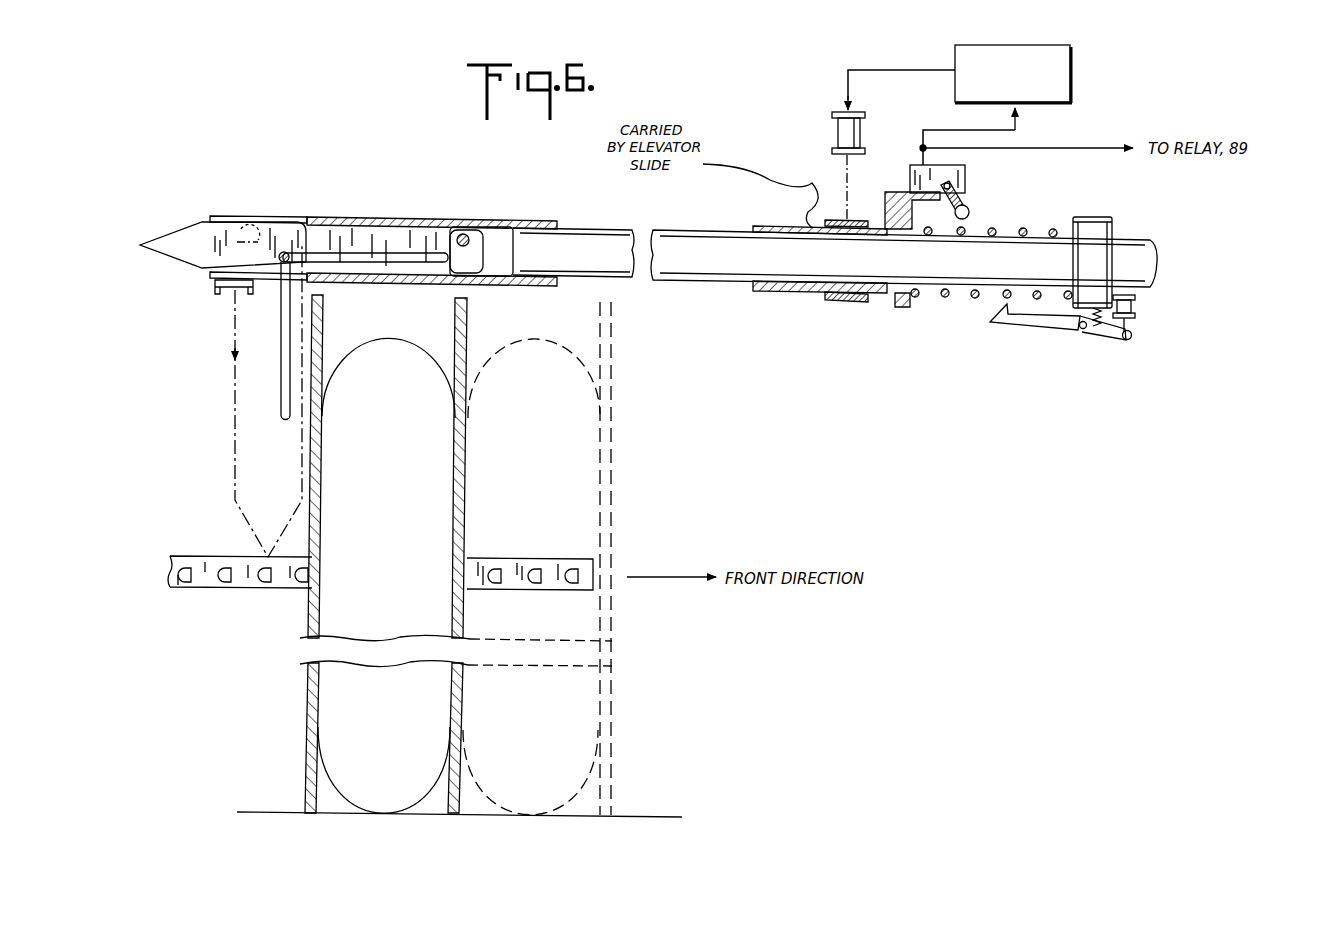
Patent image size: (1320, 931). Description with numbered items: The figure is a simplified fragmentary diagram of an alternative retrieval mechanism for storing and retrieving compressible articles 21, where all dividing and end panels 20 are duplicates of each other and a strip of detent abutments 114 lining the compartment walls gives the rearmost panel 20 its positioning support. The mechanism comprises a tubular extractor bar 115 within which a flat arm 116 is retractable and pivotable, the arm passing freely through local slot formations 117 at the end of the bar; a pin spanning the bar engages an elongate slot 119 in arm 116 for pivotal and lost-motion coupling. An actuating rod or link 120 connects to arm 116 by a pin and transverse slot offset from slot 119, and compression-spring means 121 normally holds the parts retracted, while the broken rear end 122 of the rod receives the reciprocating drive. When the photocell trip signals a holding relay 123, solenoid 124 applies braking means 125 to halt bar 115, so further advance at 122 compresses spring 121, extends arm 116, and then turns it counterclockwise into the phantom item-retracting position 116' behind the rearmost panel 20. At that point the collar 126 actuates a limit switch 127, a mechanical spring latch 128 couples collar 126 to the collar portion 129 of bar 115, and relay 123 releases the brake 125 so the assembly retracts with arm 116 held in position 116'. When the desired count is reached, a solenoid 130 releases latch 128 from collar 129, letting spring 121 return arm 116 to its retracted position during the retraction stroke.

The dividing and end panels 20 is at (312, 468).
The compressible articles 21 is at (394, 511).
The strip of detent abutments 114 is at (507, 557).
The tubular extractor bar 115 is at (380, 217).
The arm 116 is at (288, 245).
The item-retracting position of arm 116' is at (232, 401).
The local slot formations 117 is at (262, 216).
The elongate slot 119 is at (398, 257).
The actuating rod or link 120 is at (617, 230).
The compression-spring means 121 is at (1026, 227).
The broken rear end of rod 122 is at (1147, 240).
The holding relay 123 is at (1071, 76).
The solenoid 124 is at (838, 128).
The braking means 125 is at (834, 303).
The collar 126 is at (1097, 217).
The limit switch 127 is at (965, 179).
The mechanical spring latch 128 is at (1038, 331).
The collar portion of bar 129 is at (900, 309).
The solenoid 130 is at (1138, 305).